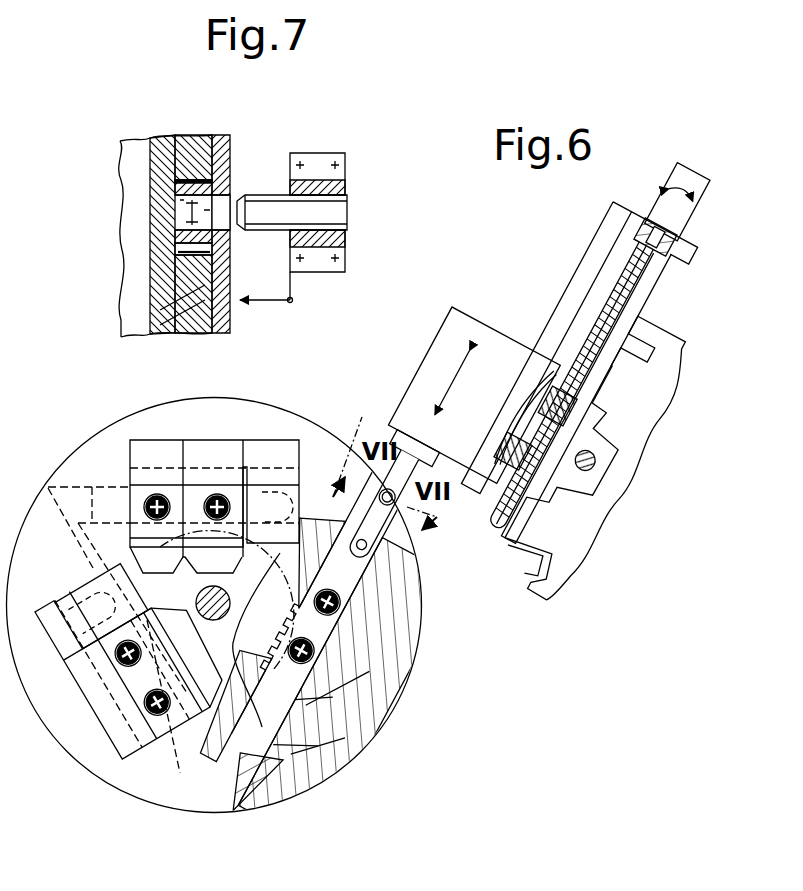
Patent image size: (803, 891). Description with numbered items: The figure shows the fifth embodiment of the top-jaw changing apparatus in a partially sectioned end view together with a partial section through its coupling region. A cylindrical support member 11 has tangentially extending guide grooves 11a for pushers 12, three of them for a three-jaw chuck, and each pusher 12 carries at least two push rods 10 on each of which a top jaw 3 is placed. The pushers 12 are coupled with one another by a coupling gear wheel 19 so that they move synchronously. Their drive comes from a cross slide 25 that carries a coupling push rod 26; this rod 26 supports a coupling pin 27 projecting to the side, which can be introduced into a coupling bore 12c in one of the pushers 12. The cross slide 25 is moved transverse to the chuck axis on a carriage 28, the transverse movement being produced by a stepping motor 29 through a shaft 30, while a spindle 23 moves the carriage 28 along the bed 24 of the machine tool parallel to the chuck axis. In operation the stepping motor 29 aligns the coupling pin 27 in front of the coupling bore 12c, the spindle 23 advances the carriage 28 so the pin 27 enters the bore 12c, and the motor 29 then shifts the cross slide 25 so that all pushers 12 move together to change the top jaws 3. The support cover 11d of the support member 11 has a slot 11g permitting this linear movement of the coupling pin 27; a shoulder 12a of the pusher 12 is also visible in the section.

In FIG. 6, the top jaw 3 is at (152, 553).
In FIG. 6, the push rod 10 is at (393, 717).
In FIG. 7, the cylindrical support member 11 is at (165, 190).
In FIG. 6, the cylindrical support member 11 is at (412, 643).
In FIG. 6, the guide groove 11a is at (273, 787).
In FIG. 7, the support cover 11d is at (230, 313).
In FIG. 7, the slot 11g is at (222, 230).
In FIG. 7, the pusher 12 is at (185, 237).
In FIG. 6, the pusher 12 is at (367, 753).
In FIG. 7, the bolt shoulder 12a is at (185, 253).
In FIG. 7, the coupling bore 12c is at (178, 178).
In FIG. 7, the coupling gear wheel 19 is at (197, 305).
In FIG. 6, the coupling gear wheel 19 is at (330, 777).
In FIG. 6, the spindle 23 is at (597, 463).
In FIG. 6, the bed 24 is at (635, 408).
In FIG. 7, the cross slide 25 is at (322, 158).
In FIG. 6, the cross slide 25 is at (490, 350).
In FIG. 7, the coupling push rod 26 is at (337, 235).
In FIG. 6, the coupling push rod 26 is at (405, 430).
In FIG. 7, the coupling pin 27 is at (333, 207).
In FIG. 6, the coupling pin 27 is at (415, 618).
In FIG. 6, the carriage 28 is at (650, 282).
In FIG. 6, the stepping motor 29 is at (688, 168).
In FIG. 6, the shaft 30 is at (627, 283).